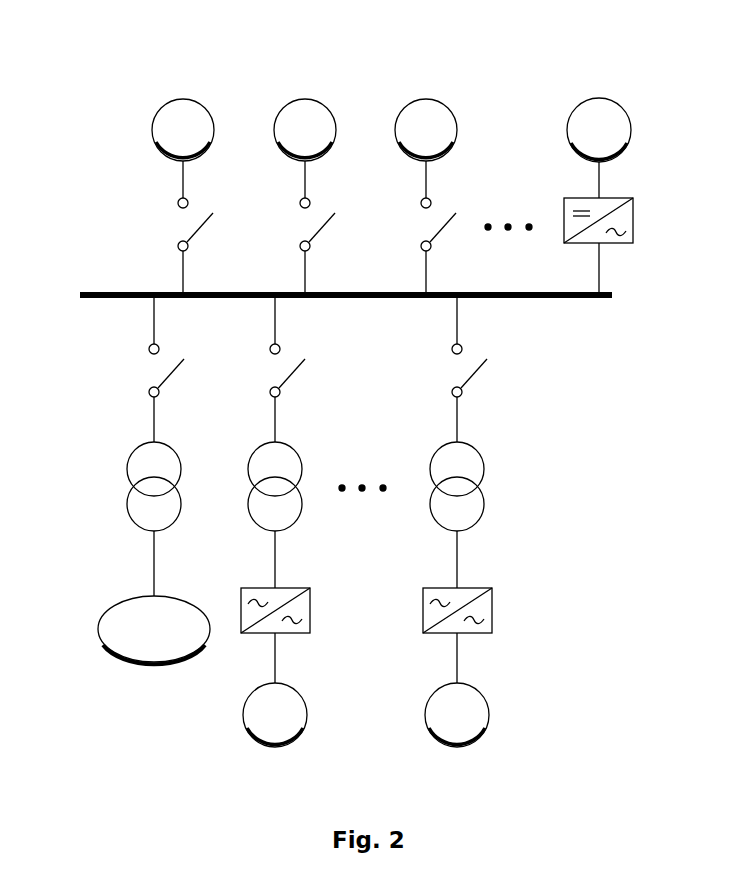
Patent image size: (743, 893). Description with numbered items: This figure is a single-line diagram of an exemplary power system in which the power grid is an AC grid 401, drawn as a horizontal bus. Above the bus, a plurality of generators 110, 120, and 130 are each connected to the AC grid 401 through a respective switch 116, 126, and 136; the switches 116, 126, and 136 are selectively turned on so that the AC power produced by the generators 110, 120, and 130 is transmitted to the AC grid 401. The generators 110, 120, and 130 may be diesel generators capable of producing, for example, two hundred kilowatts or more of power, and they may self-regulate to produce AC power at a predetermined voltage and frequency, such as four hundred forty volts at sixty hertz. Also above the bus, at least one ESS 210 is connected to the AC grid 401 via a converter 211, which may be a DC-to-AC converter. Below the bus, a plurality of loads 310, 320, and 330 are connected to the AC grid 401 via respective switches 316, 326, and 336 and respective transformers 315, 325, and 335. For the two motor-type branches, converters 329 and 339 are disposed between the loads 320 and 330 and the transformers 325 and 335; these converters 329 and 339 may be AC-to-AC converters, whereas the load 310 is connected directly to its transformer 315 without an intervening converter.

The generator 110 is at (183, 98).
The generator 120 is at (305, 98).
The generator 130 is at (426, 98).
The switch 116 is at (198, 229).
The switch 126 is at (320, 229).
The switch 136 is at (441, 229).
The ESS 210 is at (599, 98).
The converter 211 is at (633, 221).
The AC grid 401 is at (612, 295).
The load 310 is at (98, 626).
The transformer 315 is at (173, 524).
The switch 316 is at (171, 376).
The load 320 is at (306, 713).
The transformer 325 is at (294, 524).
The switch 326 is at (292, 376).
The converter 329 is at (310, 608).
The load 330 is at (488, 713).
The transformer 335 is at (476, 524).
The switch 336 is at (474, 376).
The converter 339 is at (492, 608).